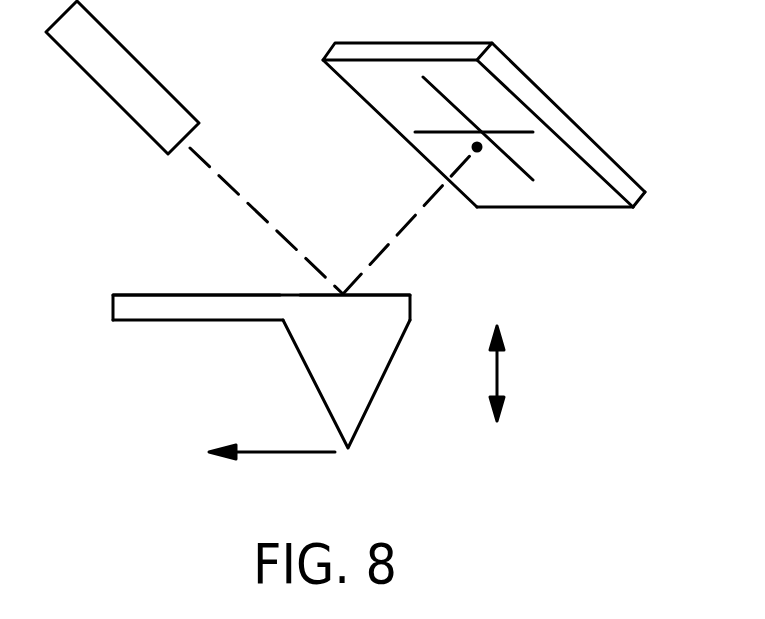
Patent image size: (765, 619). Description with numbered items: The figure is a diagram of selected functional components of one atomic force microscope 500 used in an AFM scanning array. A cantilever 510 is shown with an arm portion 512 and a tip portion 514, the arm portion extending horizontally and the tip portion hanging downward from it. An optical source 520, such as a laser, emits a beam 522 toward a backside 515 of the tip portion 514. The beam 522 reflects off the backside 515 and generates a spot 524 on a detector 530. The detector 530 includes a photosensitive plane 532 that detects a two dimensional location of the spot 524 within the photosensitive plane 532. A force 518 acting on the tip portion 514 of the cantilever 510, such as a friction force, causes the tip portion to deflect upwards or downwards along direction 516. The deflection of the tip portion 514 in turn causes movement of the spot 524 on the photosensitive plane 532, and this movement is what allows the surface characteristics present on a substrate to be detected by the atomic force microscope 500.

The atomic force microscope 500 is at (128, 408).
The cantilever 510 is at (205, 308).
The arm portion 512 is at (152, 306).
The tip portion 514 is at (353, 393).
The backside 515 is at (380, 293).
The direction 516 is at (500, 375).
The force 518 is at (295, 451).
The optical source 520 is at (117, 80).
The beam 522 is at (266, 214).
The spot 524 is at (477, 148).
The detector 530 is at (607, 164).
The photosensitive plane 532 is at (490, 105).